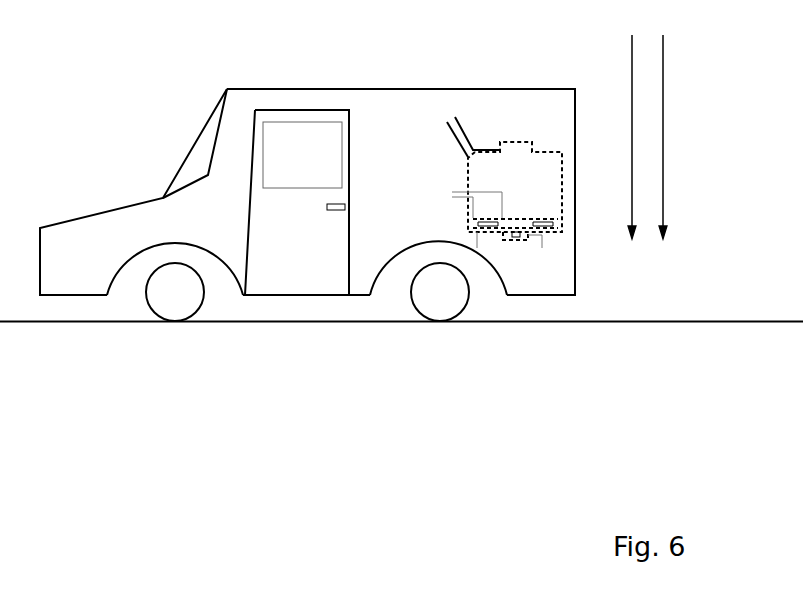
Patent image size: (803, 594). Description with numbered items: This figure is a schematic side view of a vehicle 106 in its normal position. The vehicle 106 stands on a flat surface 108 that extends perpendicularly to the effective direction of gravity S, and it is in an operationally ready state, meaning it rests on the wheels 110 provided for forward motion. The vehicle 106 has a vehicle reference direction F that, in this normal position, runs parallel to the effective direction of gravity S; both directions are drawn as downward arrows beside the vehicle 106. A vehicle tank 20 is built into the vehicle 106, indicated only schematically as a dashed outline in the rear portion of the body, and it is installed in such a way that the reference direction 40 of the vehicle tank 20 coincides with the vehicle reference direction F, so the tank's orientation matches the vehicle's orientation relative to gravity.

The vehicle 106 is at (241, 129).
The wheels 110 is at (187, 303).
The flat surface 108 is at (693, 322).
The vehicle tank 20 is at (497, 140).
The reference direction 40 is at (669, 137).